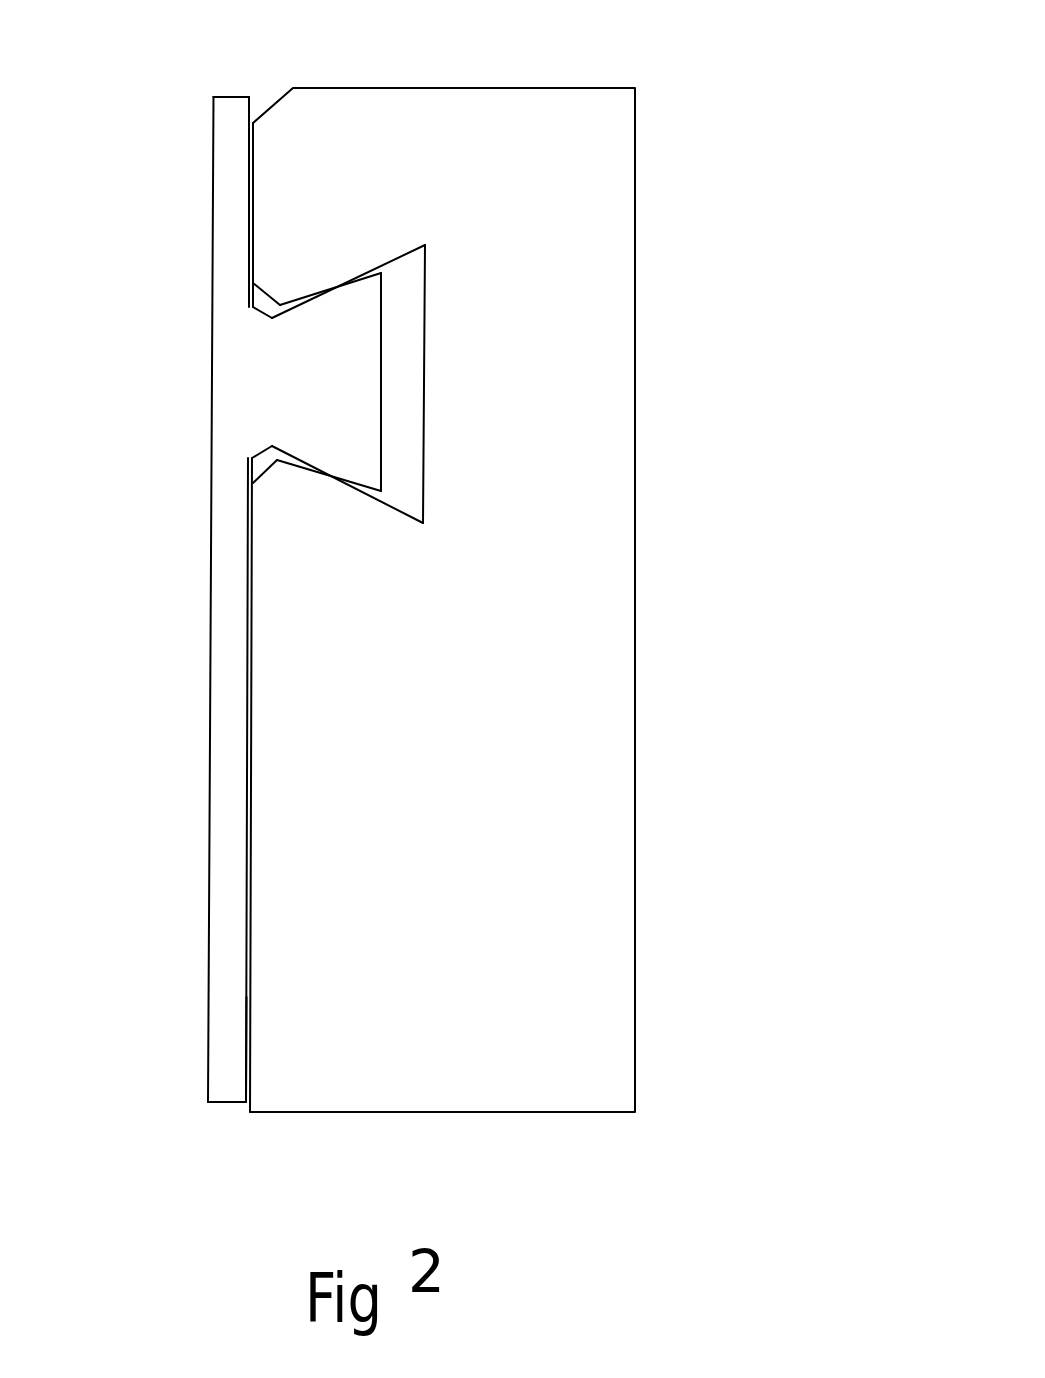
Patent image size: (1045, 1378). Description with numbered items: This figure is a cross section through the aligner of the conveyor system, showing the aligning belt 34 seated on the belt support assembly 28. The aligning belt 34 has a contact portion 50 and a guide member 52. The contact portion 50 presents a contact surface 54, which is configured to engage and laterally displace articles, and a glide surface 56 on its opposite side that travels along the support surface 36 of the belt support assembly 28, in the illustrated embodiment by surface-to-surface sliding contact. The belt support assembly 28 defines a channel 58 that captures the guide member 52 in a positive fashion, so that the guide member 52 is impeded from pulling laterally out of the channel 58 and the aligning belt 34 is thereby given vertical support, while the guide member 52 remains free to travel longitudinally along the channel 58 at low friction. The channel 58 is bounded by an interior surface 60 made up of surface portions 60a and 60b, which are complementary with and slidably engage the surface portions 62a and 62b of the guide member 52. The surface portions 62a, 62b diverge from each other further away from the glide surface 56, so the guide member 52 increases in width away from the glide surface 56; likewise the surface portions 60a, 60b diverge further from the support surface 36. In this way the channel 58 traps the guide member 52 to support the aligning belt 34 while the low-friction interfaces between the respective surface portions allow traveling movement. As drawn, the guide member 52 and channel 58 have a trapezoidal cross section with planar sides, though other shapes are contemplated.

The belt support assembly 28 is at (635, 88).
The aligning belt 34 is at (213, 97).
The support surface 36 is at (252, 175).
The contact portion 50 is at (212, 728).
The guide member 52 is at (330, 298).
The contact surface 54 is at (212, 422).
The glide surface 56 is at (245, 228).
The channel 58 is at (424, 431).
The interior surface 60 is at (413, 363).
The surface portion 60a is at (393, 268).
The surface portion 60b is at (387, 503).
The surface portion 62a is at (305, 310).
The surface portion 62b is at (327, 472).